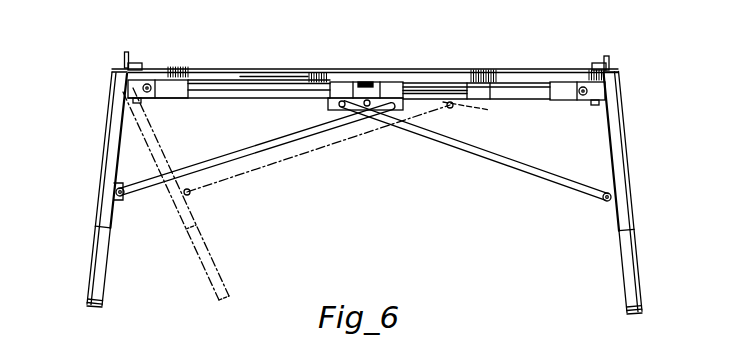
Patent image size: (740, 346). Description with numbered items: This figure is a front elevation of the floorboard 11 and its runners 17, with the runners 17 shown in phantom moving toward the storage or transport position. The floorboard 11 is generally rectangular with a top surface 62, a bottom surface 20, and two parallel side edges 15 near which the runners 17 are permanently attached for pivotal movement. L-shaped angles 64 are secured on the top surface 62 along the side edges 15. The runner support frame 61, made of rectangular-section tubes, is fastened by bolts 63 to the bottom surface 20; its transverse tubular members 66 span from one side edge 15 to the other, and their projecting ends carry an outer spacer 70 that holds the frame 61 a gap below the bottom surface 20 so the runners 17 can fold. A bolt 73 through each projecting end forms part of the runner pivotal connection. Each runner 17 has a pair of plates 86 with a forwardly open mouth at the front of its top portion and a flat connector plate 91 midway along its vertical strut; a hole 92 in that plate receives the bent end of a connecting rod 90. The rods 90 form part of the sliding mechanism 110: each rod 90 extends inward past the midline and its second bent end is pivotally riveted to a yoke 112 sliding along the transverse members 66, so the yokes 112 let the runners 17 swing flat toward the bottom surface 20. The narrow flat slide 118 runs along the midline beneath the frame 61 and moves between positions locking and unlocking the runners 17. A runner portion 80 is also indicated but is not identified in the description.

The floorboard 11 is at (498, 70).
The side edges 15 is at (112, 72).
The runners 17 is at (98, 212).
The bottom surface 20 is at (280, 82).
The runner support frame 61 is at (231, 127).
The top surface 62 is at (452, 70).
The bolts 63 is at (137, 104).
The L-shaped angles 64 is at (130, 53).
The transverse tubular members 66 is at (283, 90).
The outer spacer 70 is at (173, 92).
The bolt 73 is at (150, 86).
The leg foot 80 is at (90, 297).
The second pair of plates 86 is at (122, 63).
The connecting rod 90 is at (260, 150).
The flat connector plate 91 is at (120, 197).
The hole 92 is at (115, 180).
The sliding mechanism 110 is at (396, 147).
The yoke 112 is at (340, 85).
The slide 118 is at (367, 82).